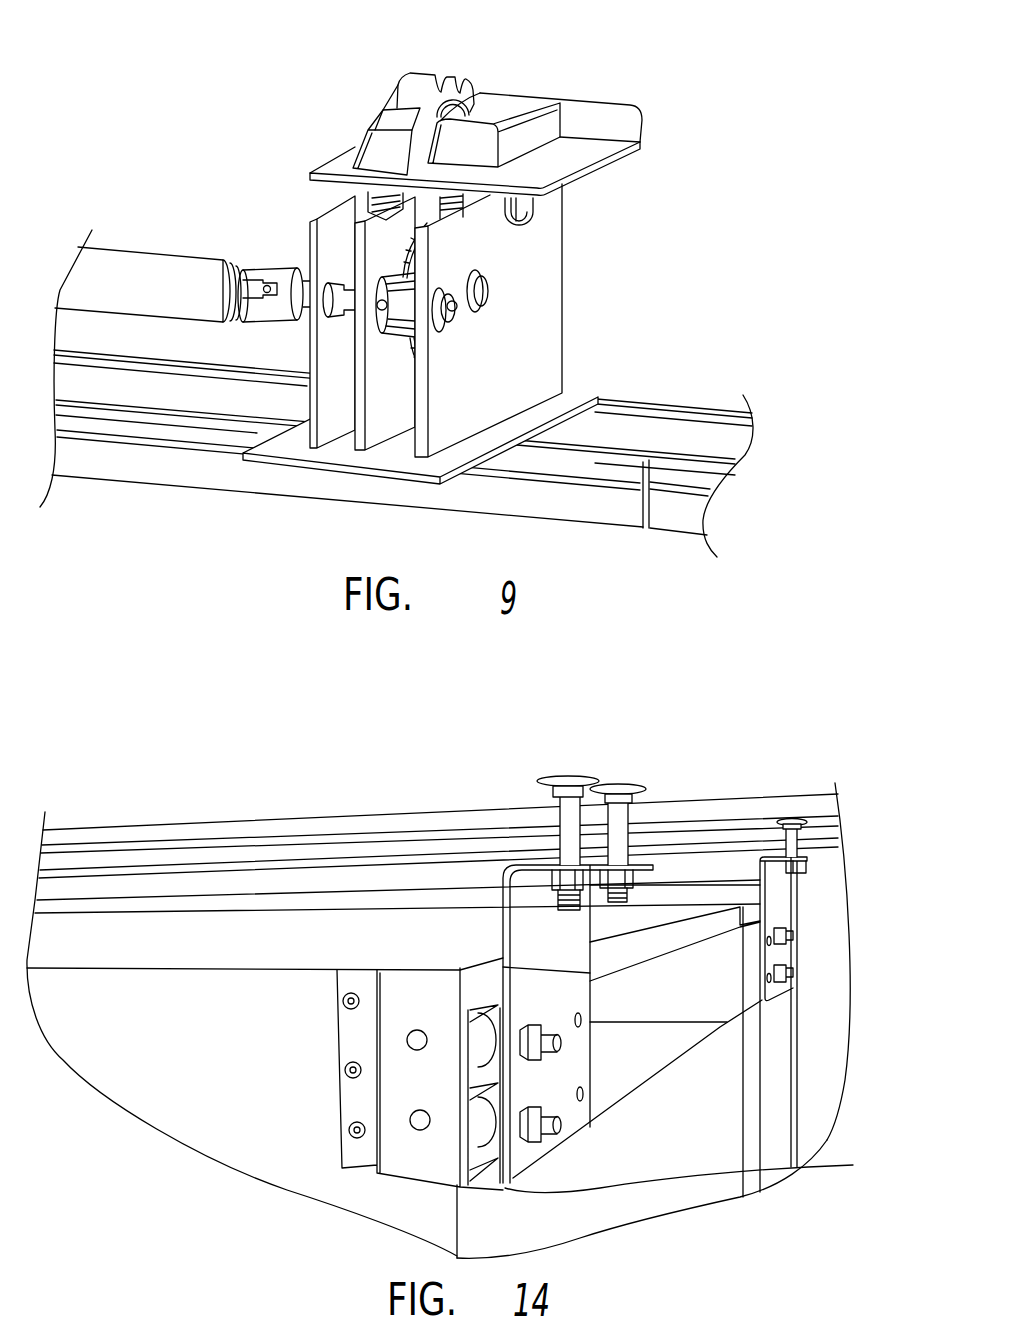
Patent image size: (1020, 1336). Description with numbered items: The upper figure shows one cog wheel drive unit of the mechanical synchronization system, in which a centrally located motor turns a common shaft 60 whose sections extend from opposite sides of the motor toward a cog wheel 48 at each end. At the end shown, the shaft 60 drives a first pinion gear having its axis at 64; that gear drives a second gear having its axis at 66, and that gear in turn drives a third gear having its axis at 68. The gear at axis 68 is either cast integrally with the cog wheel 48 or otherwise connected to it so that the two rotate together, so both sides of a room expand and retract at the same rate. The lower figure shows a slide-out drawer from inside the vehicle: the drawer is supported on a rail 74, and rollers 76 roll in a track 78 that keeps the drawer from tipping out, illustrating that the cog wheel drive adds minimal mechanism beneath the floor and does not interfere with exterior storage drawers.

In FIG. 9, the cog wheel 48 is at (447, 72).
In FIG. 9, the common shaft 60 is at (193, 267).
In FIG. 9, the axis of first pinion gear 64 is at (455, 307).
In FIG. 9, the axis of second gear 66 is at (490, 293).
In FIG. 9, the axis of third gear 68 is at (530, 212).
In FIG. 14, the rail 74 is at (652, 1080).
In FIG. 14, the rollers 76 is at (853, 1165).
In FIG. 14, the track 78 is at (590, 973).